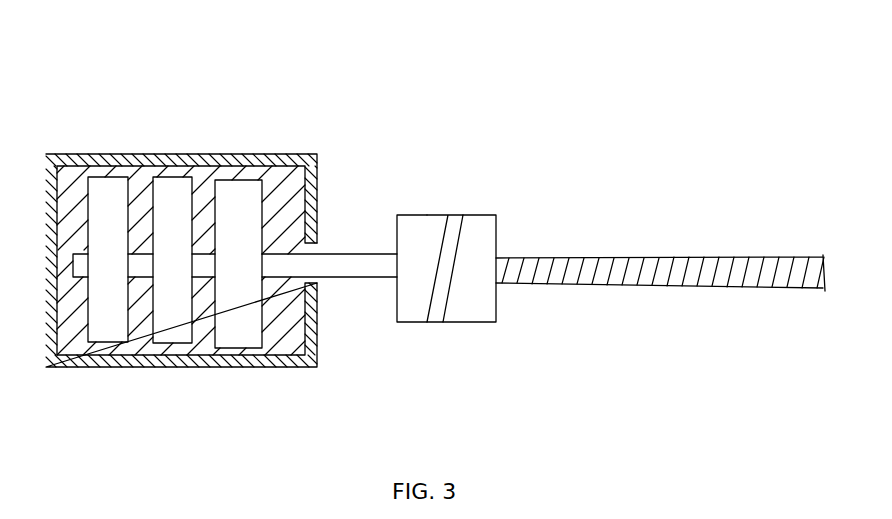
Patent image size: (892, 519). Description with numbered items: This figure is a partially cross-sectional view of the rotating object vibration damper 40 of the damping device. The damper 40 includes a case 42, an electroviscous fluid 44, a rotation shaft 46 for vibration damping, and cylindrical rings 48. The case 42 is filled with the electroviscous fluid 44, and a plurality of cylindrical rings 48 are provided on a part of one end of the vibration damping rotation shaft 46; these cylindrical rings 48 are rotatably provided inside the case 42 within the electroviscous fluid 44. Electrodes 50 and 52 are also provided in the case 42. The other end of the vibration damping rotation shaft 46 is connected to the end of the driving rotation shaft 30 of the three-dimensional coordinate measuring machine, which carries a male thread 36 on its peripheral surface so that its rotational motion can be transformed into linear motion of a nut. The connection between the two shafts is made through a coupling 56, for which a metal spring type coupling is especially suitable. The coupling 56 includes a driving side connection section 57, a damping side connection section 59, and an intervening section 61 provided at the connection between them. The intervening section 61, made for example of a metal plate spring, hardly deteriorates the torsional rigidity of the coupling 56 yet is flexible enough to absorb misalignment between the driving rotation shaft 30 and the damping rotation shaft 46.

The driving rotation shaft 30 is at (712, 278).
The male thread 36 is at (638, 266).
The rotating object vibration damper 40 is at (209, 104).
The case 42 is at (316, 353).
The electroviscous fluid 44 is at (300, 186).
The rotation shaft for vibration damping 46 is at (287, 262).
The cylindrical rings 48 is at (122, 194).
The electrode 50 is at (74, 185).
The electrode 52 is at (280, 348).
The coupling 56 is at (463, 162).
The driving side connection section 57 is at (487, 222).
The damping side connection section 59 is at (410, 222).
The intervening section 61 is at (456, 222).